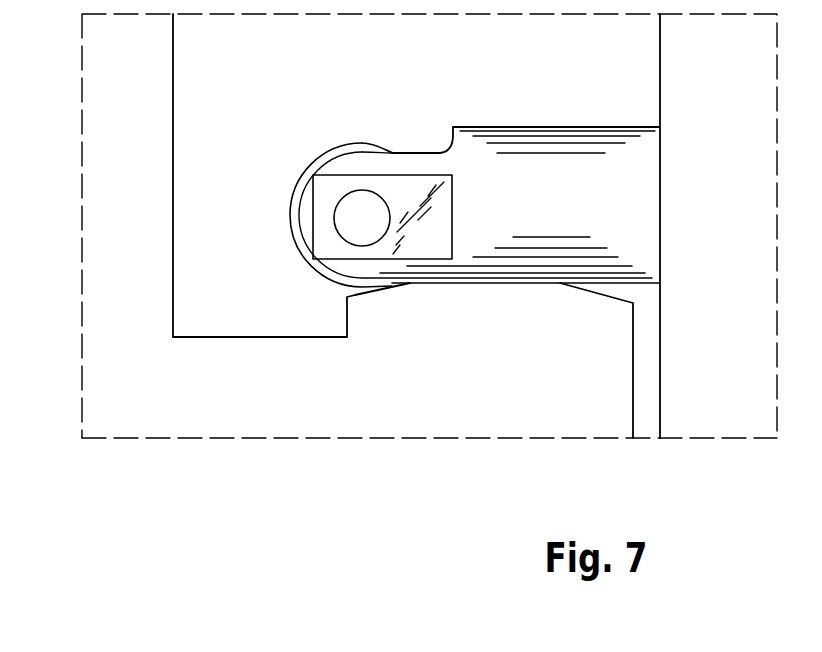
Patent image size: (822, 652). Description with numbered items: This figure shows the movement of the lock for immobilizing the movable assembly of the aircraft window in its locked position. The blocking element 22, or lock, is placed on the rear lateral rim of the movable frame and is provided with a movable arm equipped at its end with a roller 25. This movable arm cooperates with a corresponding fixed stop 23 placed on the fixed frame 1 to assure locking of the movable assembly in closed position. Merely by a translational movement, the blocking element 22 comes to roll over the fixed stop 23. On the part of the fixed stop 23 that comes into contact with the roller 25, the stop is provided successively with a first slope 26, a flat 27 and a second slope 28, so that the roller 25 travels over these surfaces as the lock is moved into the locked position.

The fixed frame 1 is at (123, 152).
The blocking element 22 is at (549, 123).
The fixed stop 23 is at (269, 402).
The roller 25 is at (313, 162).
The first slope 26 is at (597, 294).
The flat 27 is at (488, 289).
The second slope 28 is at (384, 293).